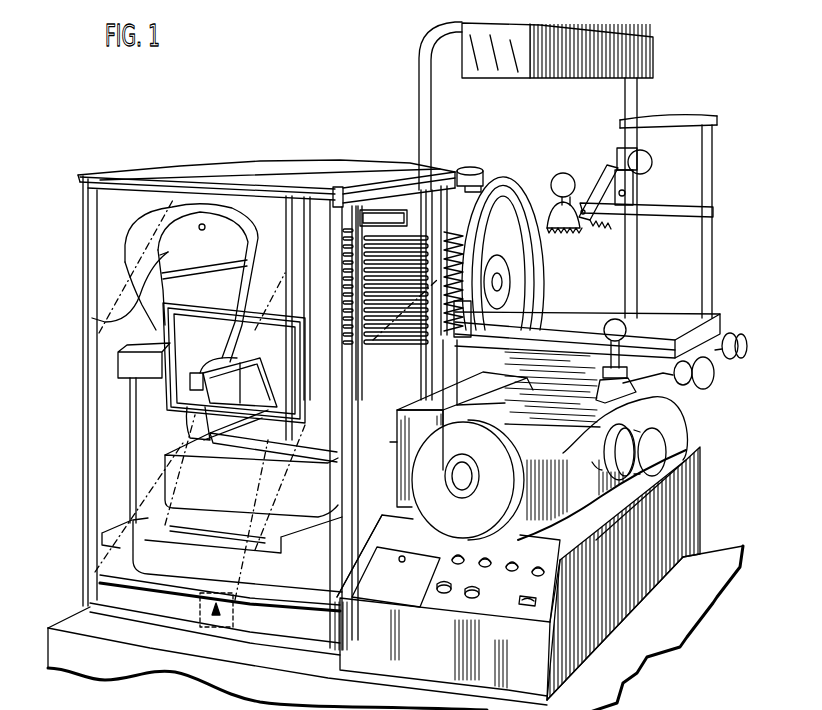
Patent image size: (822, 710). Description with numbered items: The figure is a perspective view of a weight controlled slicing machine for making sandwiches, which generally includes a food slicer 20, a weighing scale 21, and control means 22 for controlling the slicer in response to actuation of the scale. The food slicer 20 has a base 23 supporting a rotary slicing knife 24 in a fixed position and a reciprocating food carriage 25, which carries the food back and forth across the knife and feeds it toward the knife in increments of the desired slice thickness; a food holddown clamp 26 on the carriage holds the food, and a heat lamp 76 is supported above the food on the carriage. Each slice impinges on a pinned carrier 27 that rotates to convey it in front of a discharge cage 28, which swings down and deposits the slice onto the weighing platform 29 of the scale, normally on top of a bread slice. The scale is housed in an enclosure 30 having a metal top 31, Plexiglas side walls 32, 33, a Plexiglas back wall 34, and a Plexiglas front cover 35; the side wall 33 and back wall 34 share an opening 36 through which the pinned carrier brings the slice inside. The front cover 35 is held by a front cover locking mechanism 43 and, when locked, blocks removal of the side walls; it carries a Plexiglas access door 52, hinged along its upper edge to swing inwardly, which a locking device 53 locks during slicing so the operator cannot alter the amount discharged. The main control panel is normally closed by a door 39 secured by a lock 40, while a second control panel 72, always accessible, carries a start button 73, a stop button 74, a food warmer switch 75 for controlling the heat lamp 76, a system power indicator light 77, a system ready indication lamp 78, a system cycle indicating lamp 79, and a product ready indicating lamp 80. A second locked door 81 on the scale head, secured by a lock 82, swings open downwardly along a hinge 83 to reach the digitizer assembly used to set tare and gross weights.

The food slicer 20 is at (521, 172).
The weighing scale 21 is at (121, 258).
The control means 22 is at (628, 583).
The base 23 is at (672, 428).
The rotary slicing knife 24 is at (507, 228).
The reciprocating food carriage 25 is at (705, 320).
The food holddown clamp 26 is at (590, 228).
The pinned carrier 27 is at (454, 229).
The discharge cage 28 is at (398, 234).
The weighing platform 29 is at (420, 448).
The enclosure 30 is at (124, 170).
The metal top 31 is at (228, 173).
The side wall 32 is at (117, 508).
The side wall 33 is at (352, 549).
The back wall 34 is at (368, 212).
The front cover 35 is at (90, 453).
The opening 36 is at (380, 222).
The door 39 is at (401, 600).
The lock 40 is at (404, 557).
The front cover locking mechanism 43 is at (260, 560).
The access door 52 is at (187, 380).
The locking device 53 is at (183, 358).
The second control panel 72 is at (734, 695).
The start button 73 is at (478, 598).
The stop button 74 is at (458, 590).
The switch 75 is at (536, 603).
The heat lamp 76 is at (643, 62).
The system power indicator light 77 is at (459, 556).
The system ready indication lamp 78 is at (488, 560).
The system cycle indicating lamp 79 is at (516, 564).
The product ready indicating lamp 80 is at (542, 571).
The second locked door 81 is at (92, 318).
The lock 82 is at (202, 225).
The hinge 83 is at (245, 240).